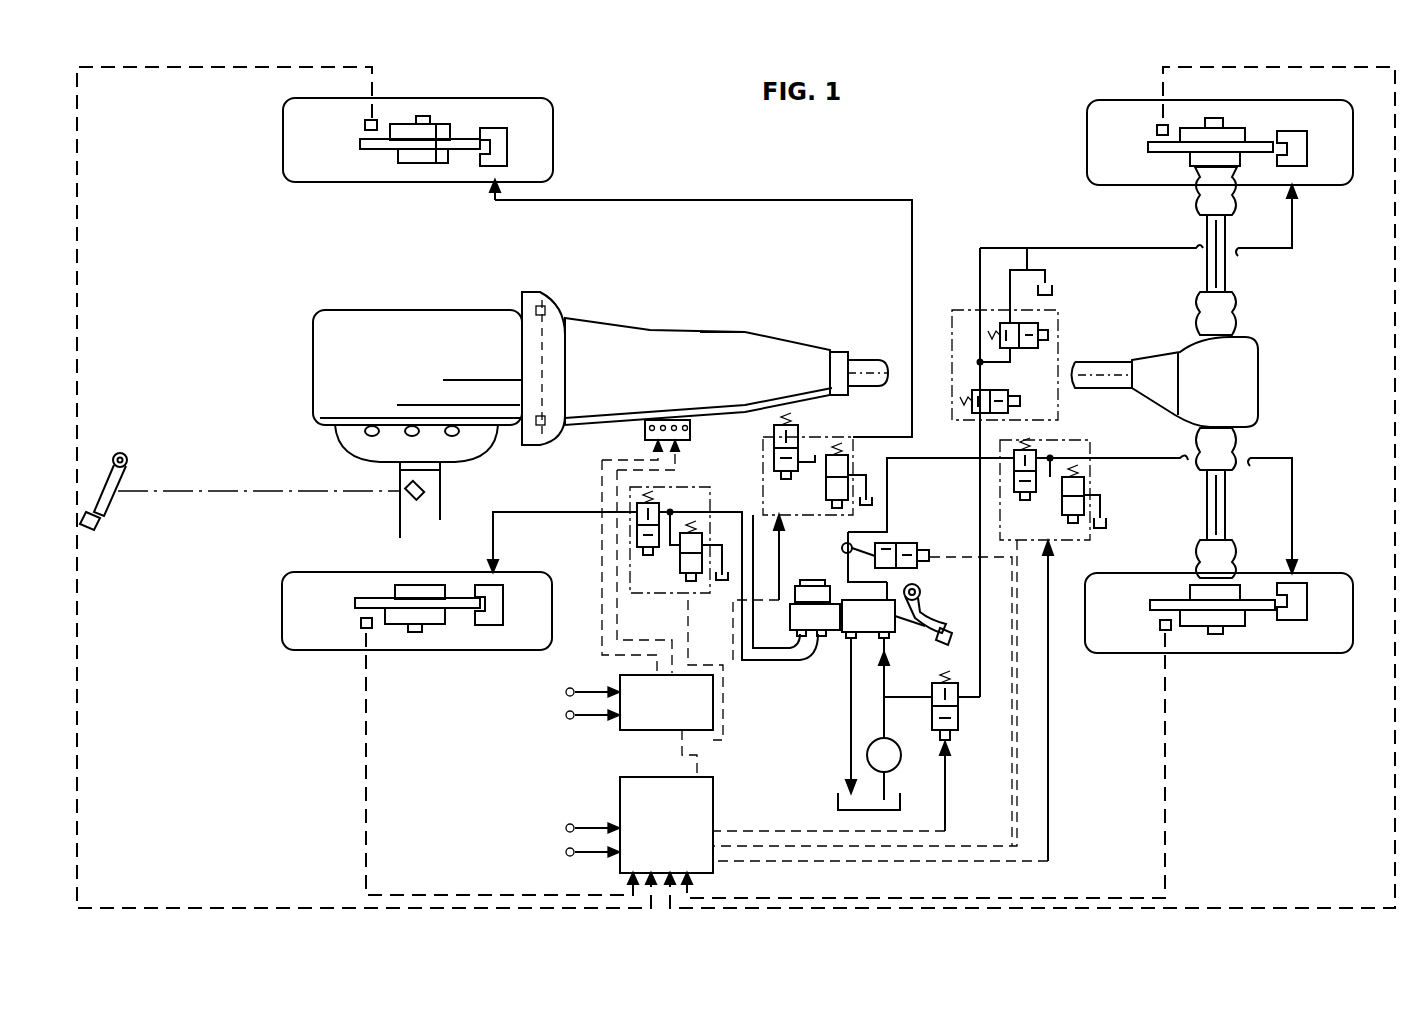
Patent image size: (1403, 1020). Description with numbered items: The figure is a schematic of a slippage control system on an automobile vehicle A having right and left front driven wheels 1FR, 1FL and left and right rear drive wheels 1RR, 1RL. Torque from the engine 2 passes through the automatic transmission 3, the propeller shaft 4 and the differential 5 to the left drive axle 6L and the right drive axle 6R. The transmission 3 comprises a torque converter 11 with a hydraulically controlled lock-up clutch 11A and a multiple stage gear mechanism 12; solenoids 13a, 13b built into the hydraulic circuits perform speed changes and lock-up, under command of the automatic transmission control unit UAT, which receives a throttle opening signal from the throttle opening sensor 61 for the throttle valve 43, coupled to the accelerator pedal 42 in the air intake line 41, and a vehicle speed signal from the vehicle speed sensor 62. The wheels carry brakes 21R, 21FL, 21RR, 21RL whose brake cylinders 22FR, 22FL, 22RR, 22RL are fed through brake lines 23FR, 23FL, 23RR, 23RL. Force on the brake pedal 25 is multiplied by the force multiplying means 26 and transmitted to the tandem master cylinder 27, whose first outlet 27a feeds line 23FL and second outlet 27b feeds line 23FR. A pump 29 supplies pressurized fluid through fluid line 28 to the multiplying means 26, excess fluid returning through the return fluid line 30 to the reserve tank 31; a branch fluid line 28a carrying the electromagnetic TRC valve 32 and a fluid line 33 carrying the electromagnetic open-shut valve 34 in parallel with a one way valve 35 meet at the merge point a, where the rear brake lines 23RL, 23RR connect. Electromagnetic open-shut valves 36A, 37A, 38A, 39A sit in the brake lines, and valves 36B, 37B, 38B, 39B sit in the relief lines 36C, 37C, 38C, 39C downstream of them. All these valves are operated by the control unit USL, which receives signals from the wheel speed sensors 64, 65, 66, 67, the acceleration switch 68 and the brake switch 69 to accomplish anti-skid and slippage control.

The automobile vehicle A is at (670, 170).
The right front driven wheel 1FR is at (318, 182).
The left front driven wheel 1FL is at (292, 650).
The right rear drive wheel 1RR is at (1087, 120).
The left rear drive wheel 1RL is at (1320, 653).
The engine 2 is at (426, 320).
The automatic transmission 3 is at (676, 312).
The propeller shaft 4 is at (866, 368).
The differential 5 is at (1256, 372).
The right drive axle 6R is at (1206, 270).
The left drive axle 6L is at (1225, 520).
The torque converter 11 is at (556, 305).
The lock-up clutch 11A is at (560, 428).
The multiple stage gear mechanism 12 is at (750, 332).
The solenoids 13a is at (672, 418).
The solenoid 13b is at (660, 422).
The right front wheel brake 21R is at (470, 118).
The left front wheel brake 21FL is at (462, 640).
The right rear wheel brake 21RR is at (1275, 110).
The left rear wheel brake 21RL is at (1258, 640).
The right front brake cylinder 22FR is at (507, 140).
The left front brake cylinder 22FL is at (503, 600).
The right rear brake cylinder 22RR is at (1307, 158).
The left rear brake cylinder 22RL is at (1307, 598).
The right front brake line 23FR is at (830, 200).
The left front brake line 23FL is at (545, 512).
The right rear brake line 23RR is at (1058, 248).
The left rear brake line 23RL is at (1295, 483).
The brake pedal 25 is at (940, 625).
The force multiplying means 26 is at (942, 645).
The master cylinder 27 is at (815, 604).
The first outlet 27a is at (822, 640).
The second outlet 27b is at (800, 640).
The fluid line 28 is at (932, 720).
The branch fluid line 28a is at (958, 742).
The pump 29 is at (918, 770).
The return fluid line 30 is at (850, 728).
The reserve tank 31 is at (838, 800).
The electromagnetic valve 32 is at (884, 697).
The fluid line 33 is at (935, 462).
The electromagnetic open-shut valve 34 is at (907, 543).
The one way valve 35 is at (842, 548).
The electromagnetic open-shut valve 36A is at (1040, 456).
The electromagnetic open-shut valve 36B is at (1086, 490).
The relief line 36C is at (1108, 522).
The electromagnetic open-shut valve 37A is at (1020, 398).
The electromagnetic open-shut valve 37B is at (1003, 325).
The relief line 37C is at (1027, 248).
The electromagnetic open-shut valve 38A is at (660, 503).
The electromagnetic open-shut valve 38B is at (705, 533).
The relief line 38C is at (662, 556).
The electromagnetic open-shut valve 39A is at (785, 424).
The electromagnetic open-shut valve 39B is at (848, 460).
The relief line 39C is at (793, 500).
The air intake line 41 is at (442, 525).
The accelerator pedal 42 is at (96, 530).
The throttle valve 43 is at (432, 490).
The throttle opening sensor 61 is at (566, 692).
The vehicle speed sensor 62 is at (566, 715).
The wheel speed sensor 64 is at (365, 125).
The wheel speed sensor 65 is at (361, 624).
The wheel speed sensor 66 is at (1157, 129).
The wheel speed sensor 67 is at (1160, 626).
The acceleration switch 68 is at (566, 826).
The brake switch 69 is at (566, 852).
The merge point a is at (980, 456).
The automatic transmission control unit UAT is at (666, 726).
The control unit USL is at (666, 825).